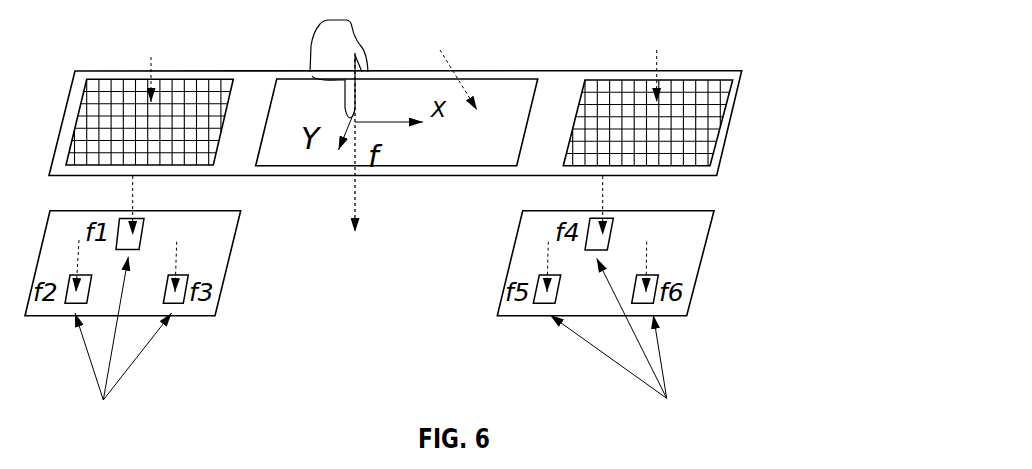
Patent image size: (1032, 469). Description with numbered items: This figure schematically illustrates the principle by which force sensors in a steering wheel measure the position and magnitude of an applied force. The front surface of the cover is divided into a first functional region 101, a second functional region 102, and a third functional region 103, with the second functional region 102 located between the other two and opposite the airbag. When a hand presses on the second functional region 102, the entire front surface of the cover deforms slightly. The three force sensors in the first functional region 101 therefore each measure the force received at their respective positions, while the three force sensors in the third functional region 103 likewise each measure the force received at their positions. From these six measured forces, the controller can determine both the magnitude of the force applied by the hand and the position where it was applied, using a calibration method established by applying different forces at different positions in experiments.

The first functional region 101 is at (100, 87).
The second functional region 102 is at (505, 95).
The third functional region 103 is at (692, 98).